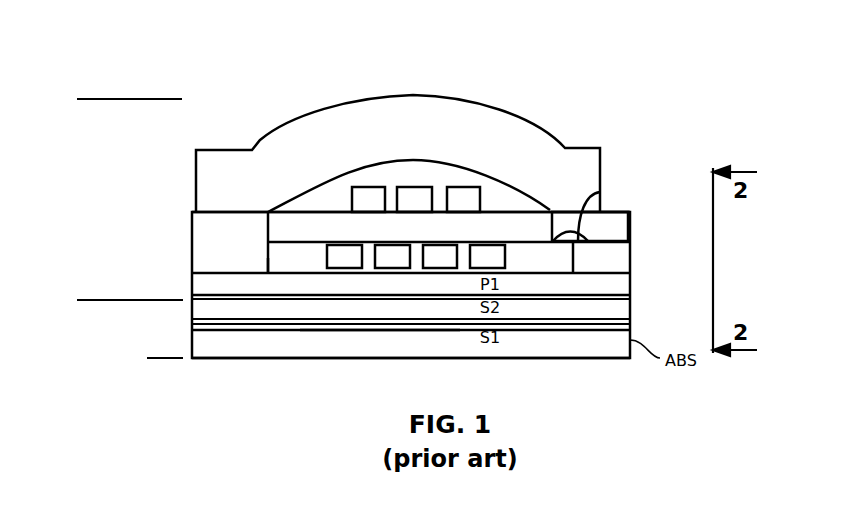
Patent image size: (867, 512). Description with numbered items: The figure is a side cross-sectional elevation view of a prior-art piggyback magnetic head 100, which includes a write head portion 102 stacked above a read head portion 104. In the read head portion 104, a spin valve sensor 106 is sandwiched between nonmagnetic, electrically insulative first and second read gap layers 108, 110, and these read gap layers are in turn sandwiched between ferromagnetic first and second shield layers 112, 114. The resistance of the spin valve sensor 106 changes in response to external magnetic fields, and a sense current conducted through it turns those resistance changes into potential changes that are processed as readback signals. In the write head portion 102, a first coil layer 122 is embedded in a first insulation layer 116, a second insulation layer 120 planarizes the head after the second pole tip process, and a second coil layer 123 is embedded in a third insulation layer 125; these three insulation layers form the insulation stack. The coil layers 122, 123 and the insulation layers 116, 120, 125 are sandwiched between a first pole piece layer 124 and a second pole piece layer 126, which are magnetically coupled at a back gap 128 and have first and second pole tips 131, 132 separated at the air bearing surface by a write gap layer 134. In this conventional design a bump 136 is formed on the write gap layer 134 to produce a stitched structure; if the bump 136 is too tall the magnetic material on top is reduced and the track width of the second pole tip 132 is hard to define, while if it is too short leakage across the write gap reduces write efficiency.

The piggyback magnetic head 100 is at (290, 61).
The write head portion 102 is at (108, 288).
The read head portion 104 is at (152, 370).
The spin valve sensor 106 is at (630, 322).
The first read gap layer 108 is at (333, 330).
The second read gap layer 110 is at (303, 313).
The first shield layer 112 is at (577, 358).
The second shield layer 114 is at (630, 305).
The first insulation layer 116 is at (290, 268).
The second insulation layer 120 is at (500, 213).
The first coil layer 122 is at (388, 273).
The second coil layer 123 is at (358, 187).
The first pole piece layer 124 is at (630, 283).
The third insulation layer 125 is at (418, 172).
The second pole piece layer 126 is at (600, 170).
The back gap 128 is at (176, 241).
The first pole tip 131 is at (630, 258).
The second pole tip 132 is at (630, 222).
The write gap layer 134 is at (630, 242).
The bump 136 is at (593, 192).